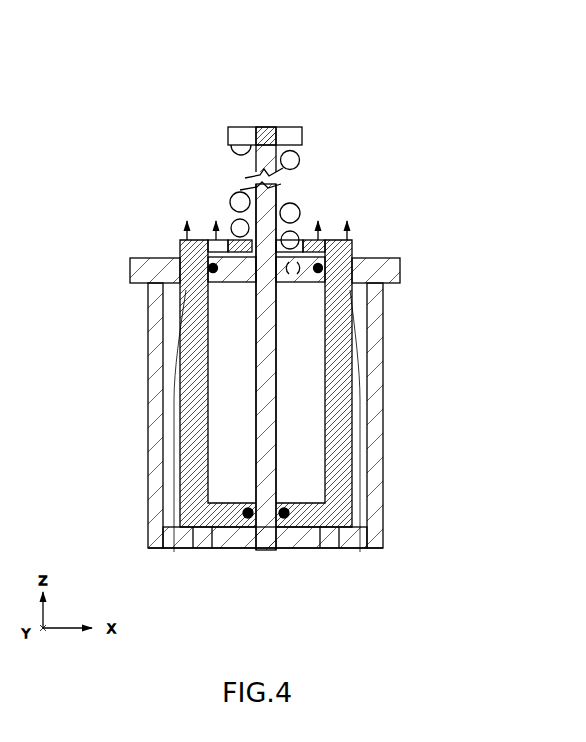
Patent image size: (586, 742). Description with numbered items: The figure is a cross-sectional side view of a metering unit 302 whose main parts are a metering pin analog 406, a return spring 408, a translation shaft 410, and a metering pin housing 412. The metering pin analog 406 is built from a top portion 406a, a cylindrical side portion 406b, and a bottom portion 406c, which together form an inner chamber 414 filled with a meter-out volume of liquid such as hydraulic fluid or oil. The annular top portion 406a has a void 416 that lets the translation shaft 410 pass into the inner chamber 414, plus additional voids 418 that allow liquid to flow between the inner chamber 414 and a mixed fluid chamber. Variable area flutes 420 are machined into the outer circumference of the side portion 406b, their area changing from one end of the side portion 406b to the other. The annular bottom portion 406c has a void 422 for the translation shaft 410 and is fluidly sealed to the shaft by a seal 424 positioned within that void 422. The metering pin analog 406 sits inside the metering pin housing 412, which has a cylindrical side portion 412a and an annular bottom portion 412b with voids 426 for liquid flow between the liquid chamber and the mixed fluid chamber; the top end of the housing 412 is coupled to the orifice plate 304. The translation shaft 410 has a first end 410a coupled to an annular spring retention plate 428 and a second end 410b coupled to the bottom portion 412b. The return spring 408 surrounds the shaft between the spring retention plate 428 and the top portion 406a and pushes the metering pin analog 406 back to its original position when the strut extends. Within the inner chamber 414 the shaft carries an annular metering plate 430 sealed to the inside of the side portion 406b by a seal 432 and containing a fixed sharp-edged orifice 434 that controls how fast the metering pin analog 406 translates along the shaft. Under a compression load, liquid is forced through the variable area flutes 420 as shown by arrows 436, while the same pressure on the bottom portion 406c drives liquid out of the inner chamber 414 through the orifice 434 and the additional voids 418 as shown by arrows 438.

The metering unit 302 is at (165, 92).
The orifice plate 304 is at (128, 275).
The metering pin analog 406 is at (266, 383).
The top portion 406a is at (355, 243).
The side portion 406b is at (352, 417).
The bottom portion 406c is at (304, 513).
The return spring 408 is at (299, 160).
The translation shaft 410 is at (282, 132).
The first end 410a is at (264, 129).
The second end 410b is at (260, 550).
The metering pin housing 412 is at (386, 370).
The side portion 412a is at (373, 392).
The bottom portion 412b is at (200, 550).
The inner chamber 414 is at (225, 458).
The void 416 is at (247, 240).
The additional voids 418 is at (230, 253).
The variable area flutes 420 is at (190, 418).
The void 422 is at (277, 550).
The seal 424 is at (246, 530).
The voids 426 is at (167, 550).
The spring retention plate 428 is at (238, 129).
The metering plate 430 is at (237, 287).
The seal 432 is at (211, 272).
The orifice 434 is at (312, 284).
The arrows 436 is at (356, 262).
The arrows 438 is at (297, 283).